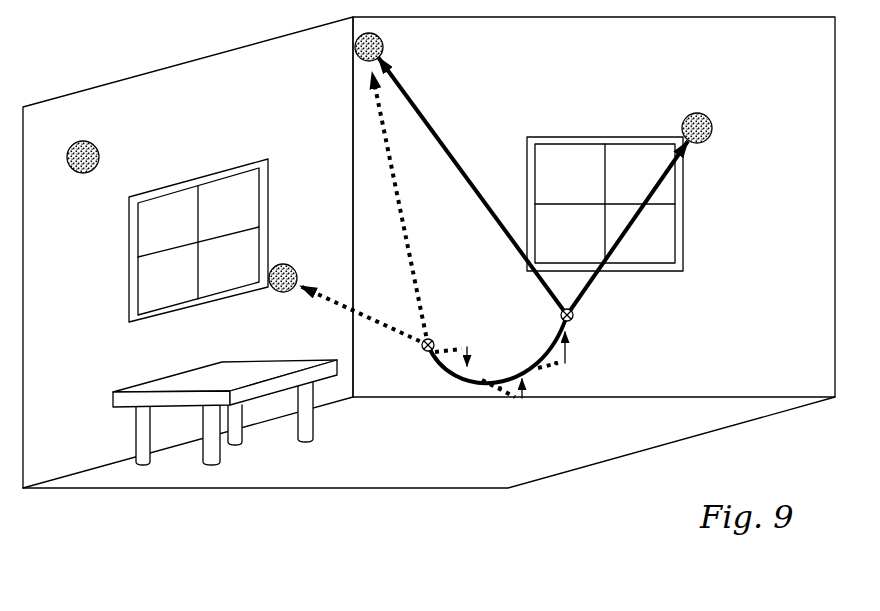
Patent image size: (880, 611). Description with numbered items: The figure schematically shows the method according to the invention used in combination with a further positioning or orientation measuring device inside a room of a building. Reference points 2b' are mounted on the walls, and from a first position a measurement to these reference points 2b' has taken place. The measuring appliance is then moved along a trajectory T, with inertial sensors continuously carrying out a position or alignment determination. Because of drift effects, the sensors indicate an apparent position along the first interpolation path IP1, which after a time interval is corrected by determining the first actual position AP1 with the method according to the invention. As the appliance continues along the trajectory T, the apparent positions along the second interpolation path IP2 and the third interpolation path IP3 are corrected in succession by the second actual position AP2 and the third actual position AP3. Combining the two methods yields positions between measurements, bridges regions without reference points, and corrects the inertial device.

The reference points 2b' is at (533, 174).
The trajectory T is at (497, 342).
The first interpolation path IP1 is at (405, 384).
The first actual position AP1 is at (419, 407).
The second interpolation path IP2 is at (542, 421).
The second actual position AP2 is at (589, 404).
The third interpolation path IP3 is at (617, 377).
The third actual position AP3 is at (622, 336).